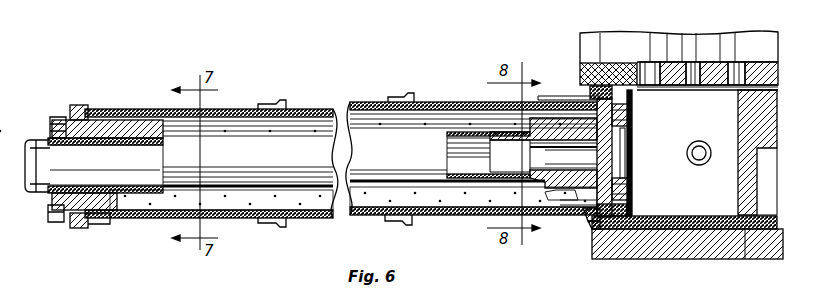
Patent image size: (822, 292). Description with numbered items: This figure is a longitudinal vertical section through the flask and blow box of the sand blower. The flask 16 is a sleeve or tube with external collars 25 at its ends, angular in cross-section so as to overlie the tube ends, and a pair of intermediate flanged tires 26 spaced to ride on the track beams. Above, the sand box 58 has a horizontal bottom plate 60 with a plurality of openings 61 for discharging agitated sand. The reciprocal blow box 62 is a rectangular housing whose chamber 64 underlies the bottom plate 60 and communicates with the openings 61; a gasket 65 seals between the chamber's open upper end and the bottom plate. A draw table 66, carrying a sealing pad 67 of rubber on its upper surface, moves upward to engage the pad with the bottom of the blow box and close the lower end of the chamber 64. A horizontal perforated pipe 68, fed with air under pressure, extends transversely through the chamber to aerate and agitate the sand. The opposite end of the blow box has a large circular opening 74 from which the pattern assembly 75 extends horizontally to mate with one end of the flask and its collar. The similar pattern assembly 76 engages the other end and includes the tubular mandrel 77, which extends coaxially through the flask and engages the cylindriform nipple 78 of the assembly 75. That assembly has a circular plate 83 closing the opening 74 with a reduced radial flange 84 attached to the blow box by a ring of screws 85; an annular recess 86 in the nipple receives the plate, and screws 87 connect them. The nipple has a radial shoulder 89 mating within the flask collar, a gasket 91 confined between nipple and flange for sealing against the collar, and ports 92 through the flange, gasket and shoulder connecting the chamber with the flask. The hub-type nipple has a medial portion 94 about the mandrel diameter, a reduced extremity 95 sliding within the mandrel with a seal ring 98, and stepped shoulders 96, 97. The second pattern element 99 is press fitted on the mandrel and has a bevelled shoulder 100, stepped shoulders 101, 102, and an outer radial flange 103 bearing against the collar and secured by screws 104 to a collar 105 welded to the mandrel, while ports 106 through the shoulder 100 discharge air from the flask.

The flask 16 is at (170, 218).
The external collar 25 is at (100, 224).
The flanged tire 26 is at (408, 100).
The sand box 58 is at (580, 40).
The bottom plate 60 is at (762, 62).
The openings 61 is at (690, 62).
The blow box 62 is at (745, 258).
The chamber 64 is at (660, 259).
The gasket 65 is at (730, 90).
The draw table 66 is at (605, 259).
The sealing pad 67 is at (588, 221).
The perforated pipe 68 is at (710, 160).
The circular opening 74 is at (630, 165).
The pattern assembly 75 is at (514, 205).
The pattern assembly 76 is at (126, 109).
The mandrel 77 is at (292, 118).
The nipple 78 is at (556, 168).
The circular plate 83 is at (625, 138).
The radial flange 84 is at (580, 74).
The screws 85 is at (628, 110).
The annular recess 86 is at (590, 168).
The screws 87 is at (628, 188).
The radial shoulder 89 is at (590, 92).
The gasket 91 is at (590, 228).
The ports 92 is at (627, 210).
The medial portion 94 is at (535, 130).
The reduced extremity 95 is at (488, 154).
The stepped shoulder 96 is at (552, 200).
The stepped shoulder 97 is at (570, 205).
The seal ring 98 is at (518, 150).
The pattern element 99 is at (191, 165).
The bevelled radial shoulder 100 is at (66, 160).
The stepped shoulder 101 is at (128, 150).
The stepped shoulder 102 is at (100, 150).
The radial flange 103 is at (78, 105).
The screws 104 is at (58, 222).
The collar 105 is at (50, 120).
The ports 106 is at (80, 228).